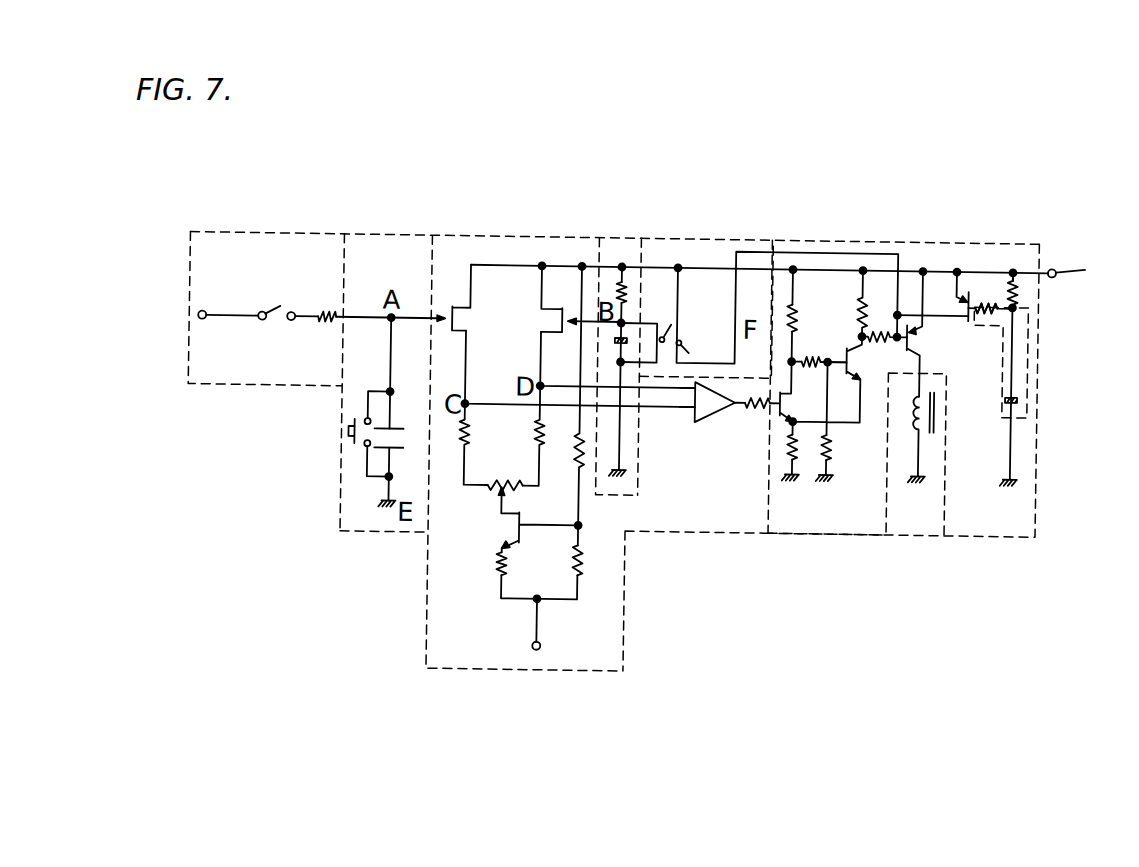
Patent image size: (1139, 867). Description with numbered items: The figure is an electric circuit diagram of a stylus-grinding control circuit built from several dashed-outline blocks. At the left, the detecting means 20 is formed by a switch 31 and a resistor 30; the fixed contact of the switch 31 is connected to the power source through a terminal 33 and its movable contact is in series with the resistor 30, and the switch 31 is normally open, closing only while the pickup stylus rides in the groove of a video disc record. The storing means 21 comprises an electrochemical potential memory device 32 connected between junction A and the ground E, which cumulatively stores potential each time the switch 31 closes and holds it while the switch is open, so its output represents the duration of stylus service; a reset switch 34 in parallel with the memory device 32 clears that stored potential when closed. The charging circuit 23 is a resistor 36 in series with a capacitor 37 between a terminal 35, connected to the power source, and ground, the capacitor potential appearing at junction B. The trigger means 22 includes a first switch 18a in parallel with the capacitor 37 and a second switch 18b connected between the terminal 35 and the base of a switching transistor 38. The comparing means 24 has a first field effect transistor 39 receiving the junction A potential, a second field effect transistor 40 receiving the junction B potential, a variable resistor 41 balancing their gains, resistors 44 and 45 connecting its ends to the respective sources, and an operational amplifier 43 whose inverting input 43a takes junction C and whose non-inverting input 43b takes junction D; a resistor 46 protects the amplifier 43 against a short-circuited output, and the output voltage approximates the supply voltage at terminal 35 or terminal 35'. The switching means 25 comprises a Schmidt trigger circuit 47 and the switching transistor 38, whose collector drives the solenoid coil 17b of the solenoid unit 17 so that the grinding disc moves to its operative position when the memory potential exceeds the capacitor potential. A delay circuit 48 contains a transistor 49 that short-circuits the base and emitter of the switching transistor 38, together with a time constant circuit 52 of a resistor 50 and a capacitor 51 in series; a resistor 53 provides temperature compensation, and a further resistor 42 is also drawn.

The solenoid unit 17 is at (927, 505).
The solenoid coil 17b is at (909, 424).
The first switch 18a is at (665, 333).
The second switch 18b is at (684, 349).
The detecting means 20 is at (243, 383).
The storing means 21 is at (357, 521).
The trigger means 22 is at (716, 249).
The charging circuit 23 is at (608, 247).
The comparing means 24 is at (707, 512).
The switching means 25 is at (819, 507).
The resistor 30 is at (321, 327).
The switch 31 is at (271, 313).
The electrochemical potential memory device 32 is at (406, 443).
The terminal 33 is at (204, 317).
The reset switch 34 is at (350, 451).
The terminal 35 is at (1087, 266).
The terminal 35' is at (549, 689).
The resistor 36 is at (625, 293).
The capacitor 37 is at (627, 340).
The switching transistor 38 is at (914, 334).
The first field effect transistor 39 is at (456, 321).
The second field effect transistor 40 is at (549, 321).
The variable resistor 41 is at (501, 480).
The resistor 42 is at (585, 568).
The operational amplifier 43 is at (724, 412).
The inverting input 43a is at (728, 416).
The non-inverting input 43b is at (713, 409).
The resistor 44 is at (463, 444).
The resistor 45 is at (544, 443).
The resistor 46 is at (753, 410).
The Schmidt trigger circuit 47 is at (844, 414).
The delay circuit 48 is at (981, 295).
The transistor 49 is at (960, 294).
The resistor 50 is at (1002, 294).
The capacitor 51 is at (1022, 394).
The time constant circuit 52 is at (1027, 339).
The resistor 53 is at (1020, 289).